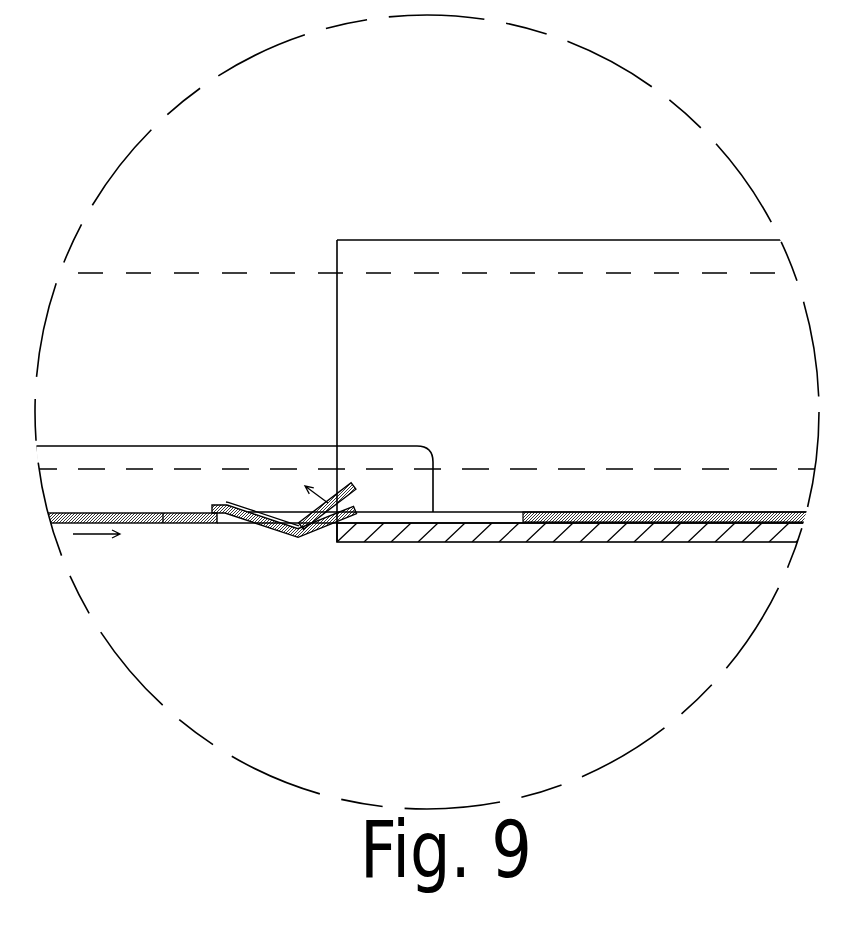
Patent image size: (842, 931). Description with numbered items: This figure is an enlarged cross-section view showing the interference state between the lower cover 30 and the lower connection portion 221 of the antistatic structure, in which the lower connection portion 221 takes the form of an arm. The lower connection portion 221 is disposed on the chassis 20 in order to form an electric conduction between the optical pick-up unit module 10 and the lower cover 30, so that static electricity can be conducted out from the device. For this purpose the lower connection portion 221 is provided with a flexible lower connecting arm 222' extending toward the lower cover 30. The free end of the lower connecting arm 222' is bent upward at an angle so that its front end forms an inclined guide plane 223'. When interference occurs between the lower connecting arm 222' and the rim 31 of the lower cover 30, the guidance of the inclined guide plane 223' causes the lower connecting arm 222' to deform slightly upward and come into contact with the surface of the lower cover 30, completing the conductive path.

The optical pick-up unit module 10 is at (284, 271).
The lower cover 30 is at (557, 240).
The chassis 20 is at (162, 523).
The rim 31 is at (363, 535).
The lower connection portion 221 is at (303, 543).
The lower connecting arm 222' is at (262, 547).
The inclined guide plane 223' is at (358, 564).